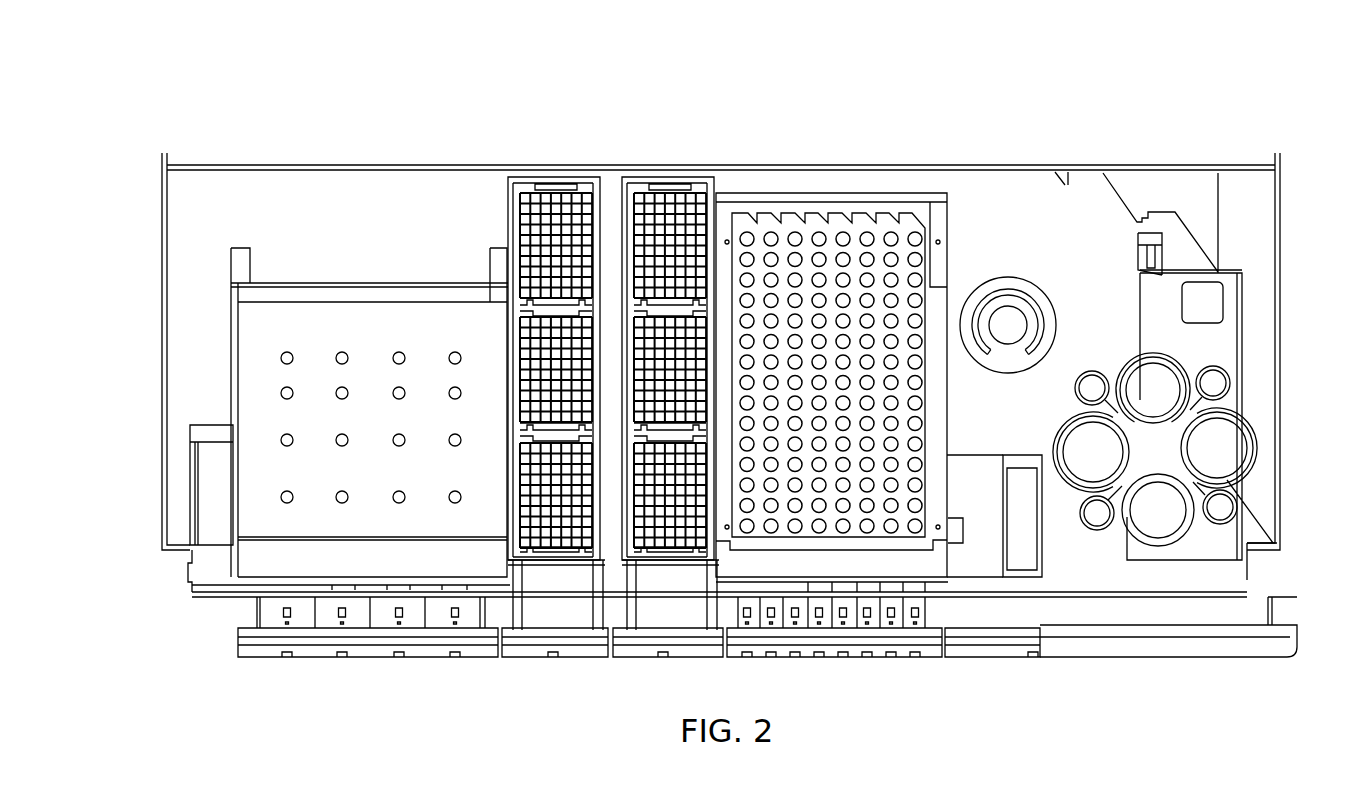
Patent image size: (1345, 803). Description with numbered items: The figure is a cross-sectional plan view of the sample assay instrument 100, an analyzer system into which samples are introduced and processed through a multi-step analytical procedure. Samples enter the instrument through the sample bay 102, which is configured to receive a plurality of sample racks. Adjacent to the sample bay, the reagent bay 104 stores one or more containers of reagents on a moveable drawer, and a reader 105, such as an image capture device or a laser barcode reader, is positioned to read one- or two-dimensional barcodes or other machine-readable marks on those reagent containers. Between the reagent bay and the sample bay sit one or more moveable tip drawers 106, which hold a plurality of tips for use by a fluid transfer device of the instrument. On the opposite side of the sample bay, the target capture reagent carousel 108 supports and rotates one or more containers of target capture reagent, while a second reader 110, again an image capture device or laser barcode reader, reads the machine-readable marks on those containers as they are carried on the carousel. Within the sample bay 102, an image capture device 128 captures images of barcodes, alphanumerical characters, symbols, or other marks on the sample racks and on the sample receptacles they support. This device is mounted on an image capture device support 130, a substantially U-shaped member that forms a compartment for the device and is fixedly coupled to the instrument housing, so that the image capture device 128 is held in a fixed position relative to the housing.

The sample assay instrument 100 is at (388, 96).
The sample bay 102 is at (820, 322).
The reagent bay 104 is at (312, 358).
The reader 105 is at (213, 480).
The moveable tip drawers 106 is at (540, 220).
The target capture reagent carousel 108 is at (1147, 460).
The reader 110 is at (1160, 248).
The image capture device 128 is at (1015, 537).
The image capture device support 130 is at (978, 453).